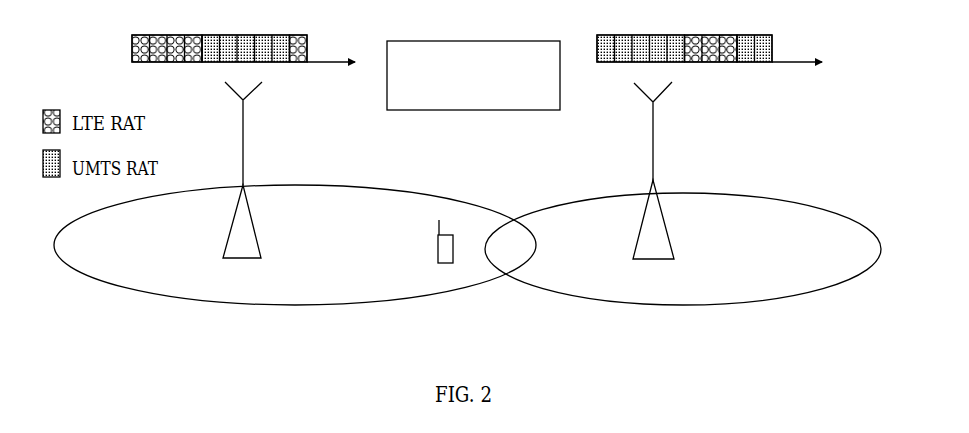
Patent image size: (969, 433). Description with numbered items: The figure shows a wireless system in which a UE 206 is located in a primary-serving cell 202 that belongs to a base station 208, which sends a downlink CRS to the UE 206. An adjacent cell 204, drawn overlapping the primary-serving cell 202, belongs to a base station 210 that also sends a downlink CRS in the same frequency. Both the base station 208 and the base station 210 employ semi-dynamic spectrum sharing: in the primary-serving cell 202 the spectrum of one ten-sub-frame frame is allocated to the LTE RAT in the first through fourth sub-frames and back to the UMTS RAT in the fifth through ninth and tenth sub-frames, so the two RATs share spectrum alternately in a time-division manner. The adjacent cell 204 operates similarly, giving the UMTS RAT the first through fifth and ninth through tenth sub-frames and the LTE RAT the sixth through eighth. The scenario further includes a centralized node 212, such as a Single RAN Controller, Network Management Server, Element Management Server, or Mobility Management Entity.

The primary-serving cell 202 is at (403, 186).
The adjacent cell 204 is at (765, 201).
The UE 206 is at (439, 250).
The base station 208 is at (242, 117).
The base station 210 is at (652, 127).
The centralized node 212 is at (438, 41).